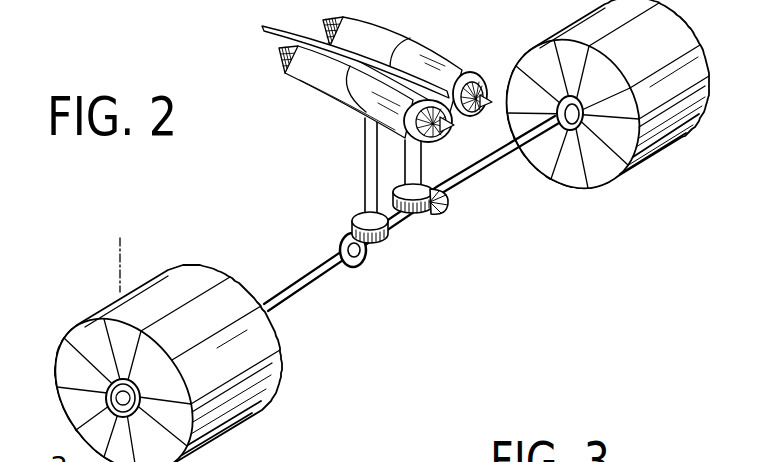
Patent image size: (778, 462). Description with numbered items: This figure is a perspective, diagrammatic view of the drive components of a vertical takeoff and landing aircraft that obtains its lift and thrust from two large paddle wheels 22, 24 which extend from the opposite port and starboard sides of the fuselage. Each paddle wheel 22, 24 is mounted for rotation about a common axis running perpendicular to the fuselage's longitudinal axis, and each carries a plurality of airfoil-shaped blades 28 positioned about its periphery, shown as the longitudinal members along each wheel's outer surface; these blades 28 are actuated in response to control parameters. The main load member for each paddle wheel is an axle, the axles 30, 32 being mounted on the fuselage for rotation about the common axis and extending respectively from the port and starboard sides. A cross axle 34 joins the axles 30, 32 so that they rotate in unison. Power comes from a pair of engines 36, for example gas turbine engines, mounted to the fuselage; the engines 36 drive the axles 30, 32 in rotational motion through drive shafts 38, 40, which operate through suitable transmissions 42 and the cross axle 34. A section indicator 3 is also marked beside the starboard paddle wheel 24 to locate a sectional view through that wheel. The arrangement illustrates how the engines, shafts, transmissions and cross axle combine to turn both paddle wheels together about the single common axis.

The paddle wheel 22 is at (632, 185).
The paddle wheel 24 is at (308, 387).
The airfoil-shaped blades 28 is at (676, 122).
The axle 30 is at (503, 176).
The axle 32 is at (316, 279).
The cross axle 34 is at (378, 211).
The engines 36 is at (423, 58).
The drive shaft 38 is at (424, 170).
The drive shaft 40 is at (365, 160).
The transmissions 42 is at (433, 215).
The section line 3-3 (view for FIG. 3) 3 is at (140, 270).